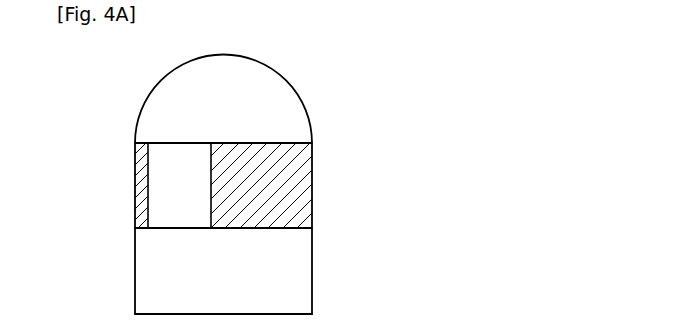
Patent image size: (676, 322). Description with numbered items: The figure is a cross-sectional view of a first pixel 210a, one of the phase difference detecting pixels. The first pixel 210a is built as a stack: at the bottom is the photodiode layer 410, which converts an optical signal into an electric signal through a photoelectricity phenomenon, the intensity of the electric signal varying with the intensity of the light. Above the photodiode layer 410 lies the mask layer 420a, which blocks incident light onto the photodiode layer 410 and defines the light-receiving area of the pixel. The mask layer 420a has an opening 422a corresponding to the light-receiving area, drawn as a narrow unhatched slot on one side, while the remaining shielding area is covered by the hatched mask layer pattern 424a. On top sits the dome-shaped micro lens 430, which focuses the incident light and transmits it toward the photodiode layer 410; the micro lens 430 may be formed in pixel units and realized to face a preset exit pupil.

The first pixel 210a is at (388, 63).
The photodiode layer 410 is at (298, 272).
The mask layer 420a is at (317, 142).
The opening 422a is at (158, 175).
The mask layer pattern 424a is at (275, 155).
The micro lens 430 is at (308, 110).